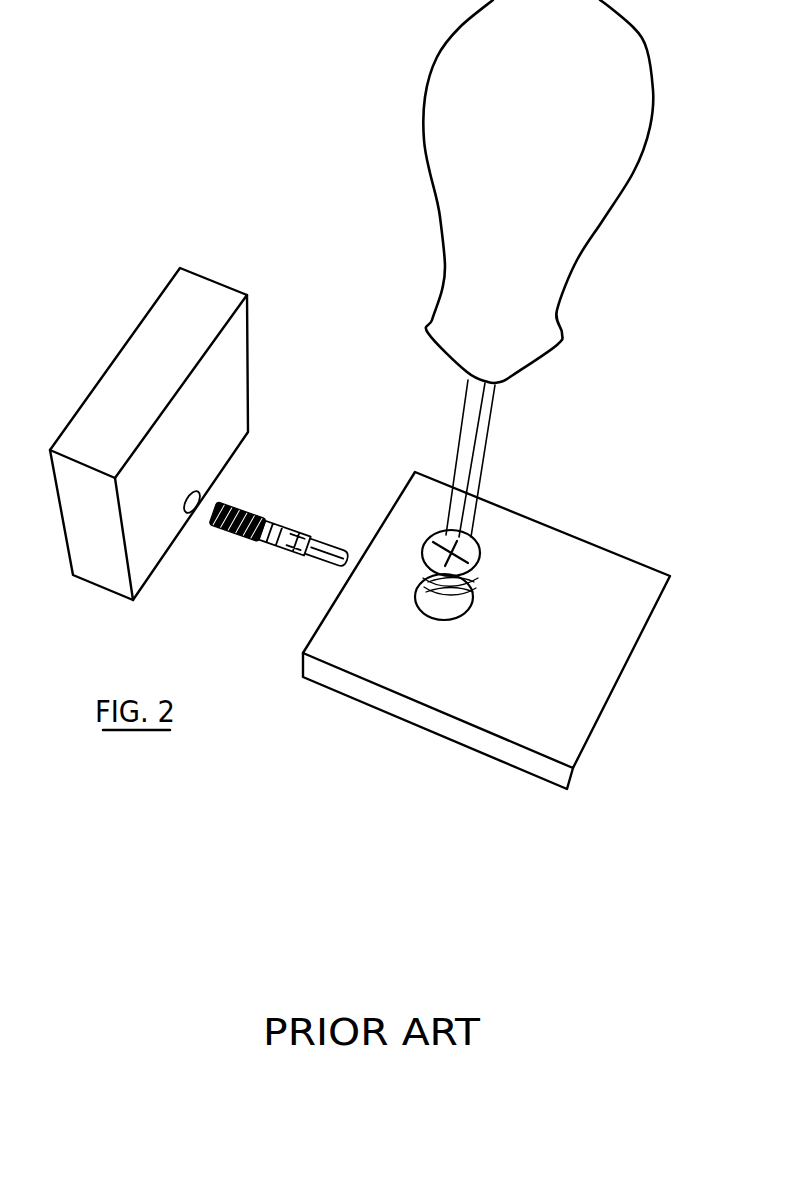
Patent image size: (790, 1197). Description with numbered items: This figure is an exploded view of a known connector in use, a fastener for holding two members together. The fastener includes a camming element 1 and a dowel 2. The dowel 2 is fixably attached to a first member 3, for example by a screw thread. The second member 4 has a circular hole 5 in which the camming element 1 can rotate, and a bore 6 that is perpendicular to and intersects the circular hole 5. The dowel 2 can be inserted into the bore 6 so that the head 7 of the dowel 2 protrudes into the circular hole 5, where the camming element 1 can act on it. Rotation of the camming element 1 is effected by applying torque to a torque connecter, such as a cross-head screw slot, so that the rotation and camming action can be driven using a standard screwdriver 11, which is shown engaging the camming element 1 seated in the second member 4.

The camming element 1 is at (490, 543).
The dowel 2 is at (293, 518).
The first member 3 is at (150, 353).
The second member 4 is at (587, 662).
The circular hole 5 is at (462, 617).
The bore 6 is at (428, 598).
The head 7 is at (315, 567).
The screwdriver 11 is at (538, 227).